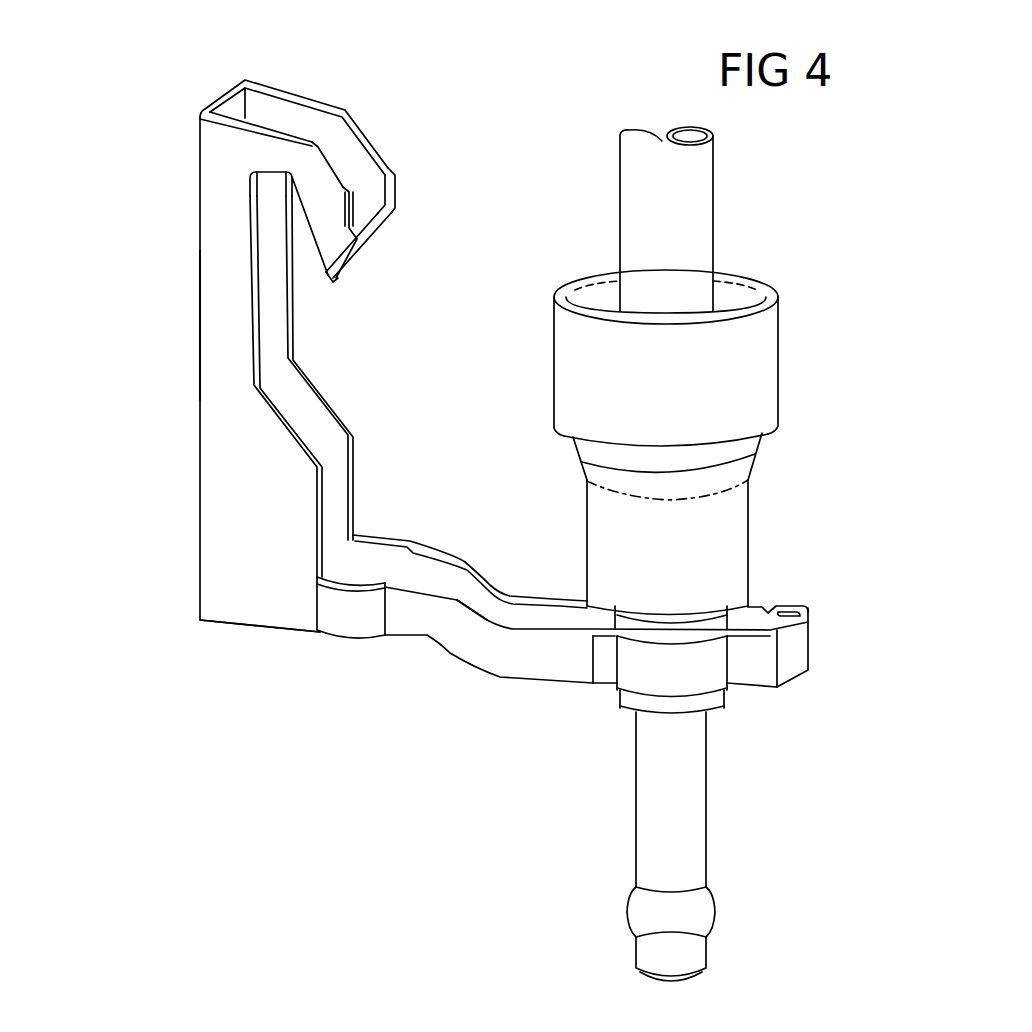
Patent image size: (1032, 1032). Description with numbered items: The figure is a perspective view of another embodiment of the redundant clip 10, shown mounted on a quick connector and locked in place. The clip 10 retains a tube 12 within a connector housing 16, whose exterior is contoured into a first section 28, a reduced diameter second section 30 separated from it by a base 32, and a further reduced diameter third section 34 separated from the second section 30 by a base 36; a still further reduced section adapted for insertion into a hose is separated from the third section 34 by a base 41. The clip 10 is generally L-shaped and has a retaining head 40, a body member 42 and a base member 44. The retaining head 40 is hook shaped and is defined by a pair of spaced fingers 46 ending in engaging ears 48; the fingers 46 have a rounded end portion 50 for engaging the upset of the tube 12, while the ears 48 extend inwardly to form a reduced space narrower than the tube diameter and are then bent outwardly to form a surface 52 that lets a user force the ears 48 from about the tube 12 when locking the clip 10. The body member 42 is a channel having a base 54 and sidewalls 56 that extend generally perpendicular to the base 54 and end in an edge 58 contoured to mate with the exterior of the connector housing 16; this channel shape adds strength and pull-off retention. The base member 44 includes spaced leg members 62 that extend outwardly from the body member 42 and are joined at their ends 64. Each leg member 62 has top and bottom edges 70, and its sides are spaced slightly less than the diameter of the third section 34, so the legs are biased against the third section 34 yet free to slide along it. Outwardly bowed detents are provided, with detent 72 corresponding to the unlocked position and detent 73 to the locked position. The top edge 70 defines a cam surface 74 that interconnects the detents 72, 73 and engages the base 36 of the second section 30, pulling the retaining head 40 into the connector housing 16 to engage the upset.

The redundant clip 10 is at (124, 178).
The tube 12 is at (738, 230).
The connector housing 16 is at (670, 449).
The first section 28 is at (778, 372).
The second section 30 is at (731, 550).
The base 32 is at (568, 432).
The third section 34 is at (613, 693).
The base 36 is at (593, 600).
The retaining head 40 is at (424, 203).
The base 41 is at (728, 704).
The body member 42 is at (160, 417).
The base member 44 is at (613, 640).
The spaced fingers 46 is at (339, 83).
The engaging ears 48 is at (335, 256).
The rounded end portion 50 is at (324, 268).
The surface 52 is at (392, 210).
The base 54 is at (200, 252).
The sidewalls 56 is at (223, 550).
The edge 58 is at (252, 192).
The leg members 62 is at (498, 607).
The ends 64 is at (800, 647).
The top and bottom edges 70 is at (788, 622).
The detent 72 is at (727, 700).
The detent 73 is at (335, 629).
The cam surface 74 is at (478, 582).